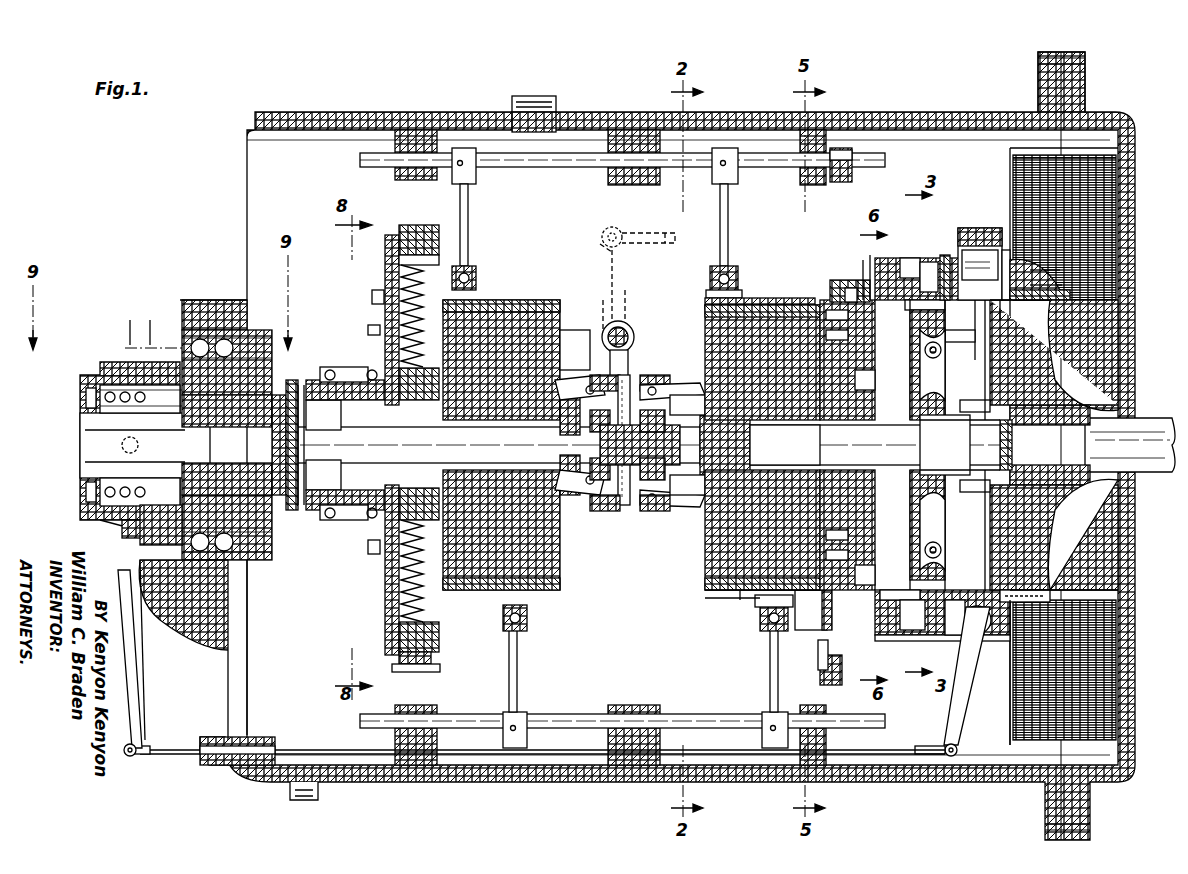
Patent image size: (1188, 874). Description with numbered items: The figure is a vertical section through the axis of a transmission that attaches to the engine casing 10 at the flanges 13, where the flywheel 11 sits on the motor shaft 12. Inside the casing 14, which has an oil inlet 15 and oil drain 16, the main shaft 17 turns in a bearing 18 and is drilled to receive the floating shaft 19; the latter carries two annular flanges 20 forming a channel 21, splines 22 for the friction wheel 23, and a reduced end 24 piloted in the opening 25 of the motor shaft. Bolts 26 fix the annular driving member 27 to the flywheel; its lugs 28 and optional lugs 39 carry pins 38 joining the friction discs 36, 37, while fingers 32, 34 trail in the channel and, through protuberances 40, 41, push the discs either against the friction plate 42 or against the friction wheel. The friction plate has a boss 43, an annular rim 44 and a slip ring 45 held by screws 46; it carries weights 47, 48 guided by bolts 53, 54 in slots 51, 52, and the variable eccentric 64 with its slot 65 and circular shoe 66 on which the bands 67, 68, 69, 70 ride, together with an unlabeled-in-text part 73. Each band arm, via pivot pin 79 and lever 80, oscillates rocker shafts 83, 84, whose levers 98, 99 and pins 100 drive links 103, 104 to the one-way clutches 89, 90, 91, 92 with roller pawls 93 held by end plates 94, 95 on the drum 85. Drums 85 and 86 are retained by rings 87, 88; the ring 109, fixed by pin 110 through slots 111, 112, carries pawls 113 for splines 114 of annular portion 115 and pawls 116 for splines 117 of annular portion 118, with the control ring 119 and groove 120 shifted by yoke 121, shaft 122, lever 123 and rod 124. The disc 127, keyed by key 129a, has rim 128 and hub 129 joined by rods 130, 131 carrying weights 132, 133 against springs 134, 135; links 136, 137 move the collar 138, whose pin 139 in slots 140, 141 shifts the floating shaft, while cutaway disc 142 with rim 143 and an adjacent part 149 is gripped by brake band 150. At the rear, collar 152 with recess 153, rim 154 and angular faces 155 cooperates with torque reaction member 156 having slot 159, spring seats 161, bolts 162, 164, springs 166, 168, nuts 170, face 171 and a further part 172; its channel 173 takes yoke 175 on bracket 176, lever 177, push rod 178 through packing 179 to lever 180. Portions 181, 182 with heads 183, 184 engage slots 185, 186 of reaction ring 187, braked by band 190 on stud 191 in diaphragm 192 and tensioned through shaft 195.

The casing 10 is at (1135, 165).
The flywheel 11 is at (1118, 285).
The motor shaft 12 is at (1158, 472).
The flanges 13 is at (1085, 95).
The casing 14 is at (900, 120).
The oil inlet 15 is at (552, 120).
The oil drain 16 is at (312, 790).
The main shaft 17 is at (455, 410).
The bearing 18 is at (205, 298).
The floating shaft 19 is at (675, 458).
The annular flanges 20 is at (1050, 385).
The annular channel 21 is at (1045, 400).
The splines 22 is at (1050, 412).
The friction wheel 23 is at (1060, 375).
The reduced end 24 is at (1075, 488).
The drilled opening 25 is at (1105, 418).
The bolts 26 is at (1060, 300).
The annular driving member 27 is at (1040, 270).
The lug 28 is at (1040, 348).
The finger 32 is at (1040, 365).
The finger 34 is at (1020, 492).
The friction disc 36 is at (1040, 520).
The friction disc 37 is at (1045, 362).
The pins 38 is at (1005, 250).
The additional lugs 39 is at (1048, 282).
The protuberance 40 is at (1030, 505).
The protuberance 41 is at (1045, 500).
The friction plate 42 is at (905, 255).
The boss 43 is at (825, 365).
The annular rim 44 is at (910, 250).
The slip ring 45 is at (1060, 590).
The screws 46 is at (895, 635).
The weight 47 is at (890, 258).
The weight 48 is at (882, 630).
The radial slot 51 is at (858, 318).
The radial slot 52 is at (860, 550).
The bolt 53 is at (870, 280).
The bolt 54 is at (862, 572).
The variable eccentric 64 is at (860, 336).
The slot 65 is at (860, 535).
The circular shoe 66 is at (808, 630).
The band 67 is at (862, 280).
The band 68 is at (855, 285).
The band 69 is at (852, 290).
The band 70 is at (835, 290).
The spring 73 is at (850, 380).
The pivot pin 79 is at (820, 670).
The lever 80 is at (835, 180).
The rocker shaft 83 is at (748, 150).
The rocker shaft 84 is at (575, 722).
The drum 85 is at (762, 362).
The drum 86 is at (501, 360).
The ring 87 is at (762, 530).
The ring 88 is at (501, 530).
The oscillating one-way clutch 89 is at (760, 642).
The oscillating one-way clutch 90 is at (760, 615).
The oscillating one-way clutch 91 is at (745, 592).
The oscillating one-way clutch 92 is at (728, 590).
The roller pawls 93 is at (735, 300).
The annular end plate 94 is at (825, 600).
The annular end plate 95 is at (720, 578).
The lever 98 is at (716, 200).
The lever 99 is at (768, 682).
The pivot pin 100 is at (712, 270).
The link 103 is at (735, 270).
The link 104 is at (760, 628).
The ring 109 is at (632, 340).
The pin 110 is at (610, 340).
The slot 111 is at (645, 378).
The slot 112 is at (640, 510).
The pawls 113 is at (682, 500).
The splines 114 is at (695, 385).
The annular portion 115 is at (710, 320).
The pawls 116 is at (580, 375).
The splines 117 is at (575, 340).
The annular portion 118 is at (572, 505).
The control ring 119 is at (660, 515).
The groove 120 is at (618, 515).
The yoke 121 is at (633, 320).
The shaft 122 is at (628, 290).
The lever 123 is at (600, 244).
The rod 124 is at (655, 232).
The disc 127 is at (432, 625).
The rim 128 is at (416, 677).
The hub 129 is at (349, 445).
The key 129a is at (490, 445).
The axial rod 130 is at (385, 285).
The axial rod 131 is at (398, 585).
The weight 132 is at (380, 350).
The weight 133 is at (385, 560).
The spring 134 is at (398, 248).
The spring 135 is at (398, 615).
The link 136 is at (348, 365).
The link 137 is at (355, 520).
The collar 138 is at (280, 395).
The pin 139 is at (294, 520).
The slot 140 is at (318, 400).
The slot 141 is at (312, 505).
The cutaway disc 142 is at (385, 265).
The annular rim 143 is at (455, 240).
The pin 149 is at (372, 297).
The brake band 150 is at (400, 235).
The collar 152 is at (248, 365).
The recess 153 is at (248, 540).
The annular rim 154 is at (188, 305).
The angular faces 155 is at (150, 320).
The torque reaction member 156 is at (112, 372).
The longitudinal arcuate slot 159 is at (170, 522).
The spring seats 161 is at (115, 372).
The bolt 162 is at (85, 396).
The bolt 164 is at (85, 495).
The coil spring 166 is at (110, 380).
The coil spring 168 is at (115, 444).
The nuts 170 is at (85, 403).
The angularly formed face 171 is at (130, 320).
The bore 172 is at (80, 438).
The circular channel 173 is at (125, 540).
The yoke 175 is at (118, 528).
The fixed bracket 176 is at (176, 640).
The lever 177 is at (140, 690).
The push rod 178 is at (585, 775).
The packing 179 is at (207, 770).
The lever 180 is at (950, 727).
The forwardly projecting portion 181 is at (925, 258).
The forwardly projecting portion 182 is at (905, 640).
The projecting head 183 is at (945, 250).
The projecting head 184 is at (950, 640).
The slot 185 is at (965, 225).
The slot 186 is at (970, 680).
The reaction ring 187 is at (1020, 268).
The brake band 190 is at (972, 228).
The stud 191 is at (1005, 210).
The diaphragm 192 is at (1008, 178).
The shaft 195 is at (1095, 598).